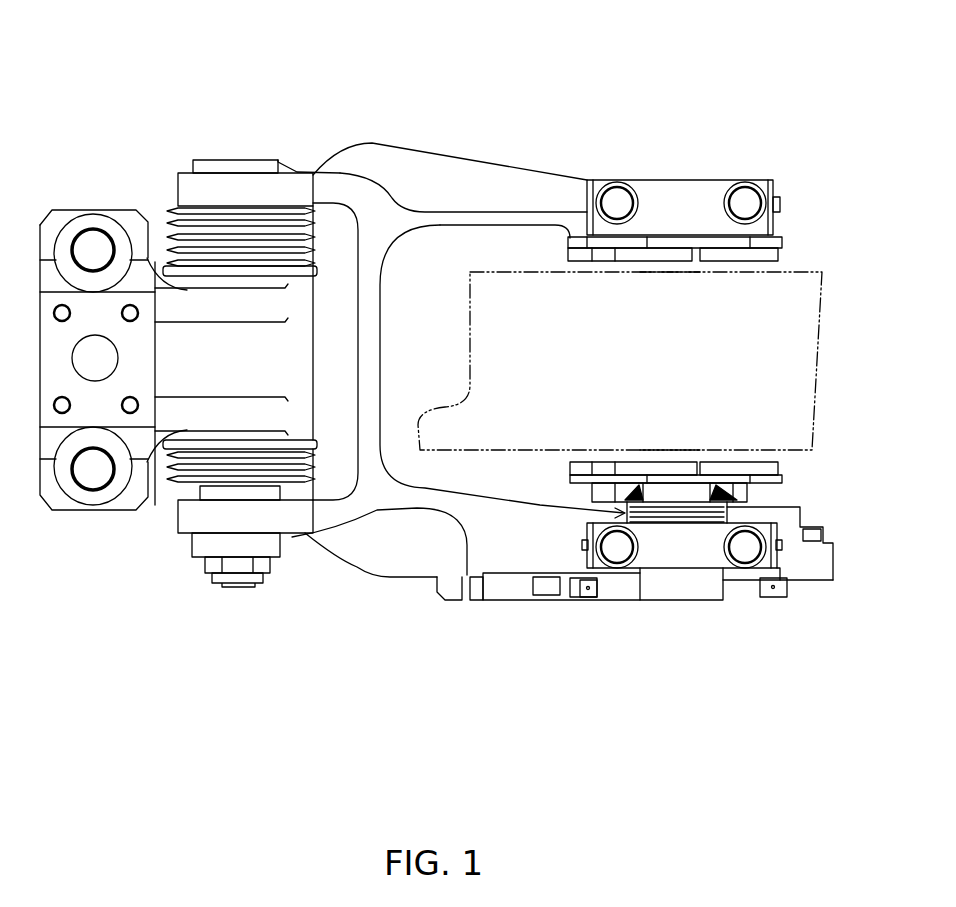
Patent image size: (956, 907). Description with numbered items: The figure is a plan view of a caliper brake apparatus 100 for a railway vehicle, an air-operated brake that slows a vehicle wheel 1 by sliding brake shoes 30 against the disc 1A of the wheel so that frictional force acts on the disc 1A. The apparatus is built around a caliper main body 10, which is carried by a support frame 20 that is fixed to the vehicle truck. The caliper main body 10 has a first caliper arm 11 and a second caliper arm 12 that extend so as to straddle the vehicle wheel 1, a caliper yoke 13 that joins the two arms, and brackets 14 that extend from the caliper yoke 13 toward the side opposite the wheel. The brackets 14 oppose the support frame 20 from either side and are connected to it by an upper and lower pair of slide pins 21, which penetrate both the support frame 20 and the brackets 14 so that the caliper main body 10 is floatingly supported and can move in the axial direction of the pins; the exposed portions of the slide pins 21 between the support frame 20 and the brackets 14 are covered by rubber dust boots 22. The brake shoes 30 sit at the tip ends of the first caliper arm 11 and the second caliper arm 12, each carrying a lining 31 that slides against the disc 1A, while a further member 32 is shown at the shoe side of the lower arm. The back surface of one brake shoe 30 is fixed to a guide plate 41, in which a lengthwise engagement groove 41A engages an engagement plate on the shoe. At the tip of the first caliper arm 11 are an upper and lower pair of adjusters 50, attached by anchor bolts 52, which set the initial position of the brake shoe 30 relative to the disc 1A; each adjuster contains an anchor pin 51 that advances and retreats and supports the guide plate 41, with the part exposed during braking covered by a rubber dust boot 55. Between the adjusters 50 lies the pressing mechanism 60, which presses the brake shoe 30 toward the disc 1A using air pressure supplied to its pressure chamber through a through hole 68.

The caliper brake apparatus 100 is at (769, 93).
The caliper main body 10 is at (478, 164).
The first caliper arm 11 is at (413, 508).
The second caliper arm 12 is at (437, 215).
The caliper yoke 13 is at (378, 376).
The bracket 14 is at (310, 190).
The support frame 20 is at (128, 222).
The slide pin 21 is at (238, 578).
The rubber dust boot 22 is at (229, 225).
The brake shoe 30 is at (787, 239).
The lining 31 is at (570, 256).
The receiving member 32 is at (695, 490).
The guide plate 41 is at (773, 503).
The engagement groove 41A is at (640, 522).
The adjuster 50 is at (705, 583).
The anchor pin 51 is at (612, 550).
The anchor bolt 52 is at (640, 550).
The rubber dust boot 55 is at (772, 540).
The pressing mechanism 60 is at (681, 598).
The through hole 68 is at (458, 578).
The vehicle wheel 1 is at (470, 340).
The disc 1A is at (664, 270).